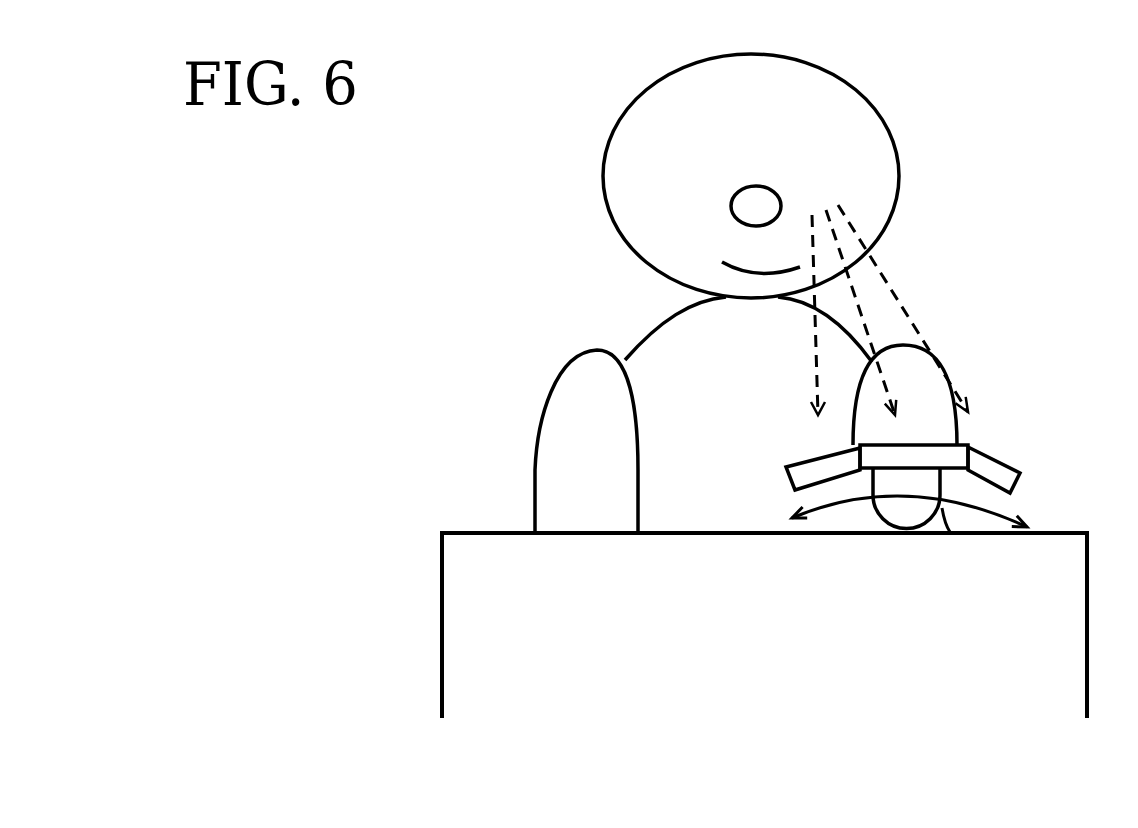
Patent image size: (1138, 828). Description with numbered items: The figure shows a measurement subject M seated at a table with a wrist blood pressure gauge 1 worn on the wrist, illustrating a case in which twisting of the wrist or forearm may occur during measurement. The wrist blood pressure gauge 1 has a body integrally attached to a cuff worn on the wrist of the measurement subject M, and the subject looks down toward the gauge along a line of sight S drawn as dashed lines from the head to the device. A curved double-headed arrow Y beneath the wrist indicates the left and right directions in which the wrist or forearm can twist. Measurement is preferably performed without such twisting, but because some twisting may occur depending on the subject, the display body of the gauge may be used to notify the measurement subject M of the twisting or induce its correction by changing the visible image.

The measurement subject M is at (904, 167).
The line of sight of the user S is at (893, 293).
The wrist blood pressure gauge 1 is at (921, 446).
The arrow Y is at (847, 506).